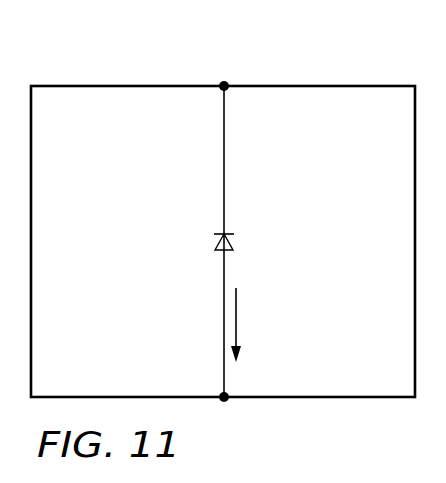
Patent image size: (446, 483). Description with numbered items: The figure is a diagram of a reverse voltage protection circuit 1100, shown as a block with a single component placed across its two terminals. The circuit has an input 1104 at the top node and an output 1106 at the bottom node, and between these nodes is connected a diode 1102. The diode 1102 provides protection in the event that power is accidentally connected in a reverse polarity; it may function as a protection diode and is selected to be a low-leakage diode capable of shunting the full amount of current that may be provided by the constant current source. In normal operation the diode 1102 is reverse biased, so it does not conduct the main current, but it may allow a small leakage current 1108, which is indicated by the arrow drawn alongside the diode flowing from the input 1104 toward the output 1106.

The reverse voltage protection circuit 1100 is at (114, 78).
The diode 1102 is at (228, 240).
The input 1104 is at (228, 80).
The output 1106 is at (224, 403).
The leakage current 1108 is at (237, 302).